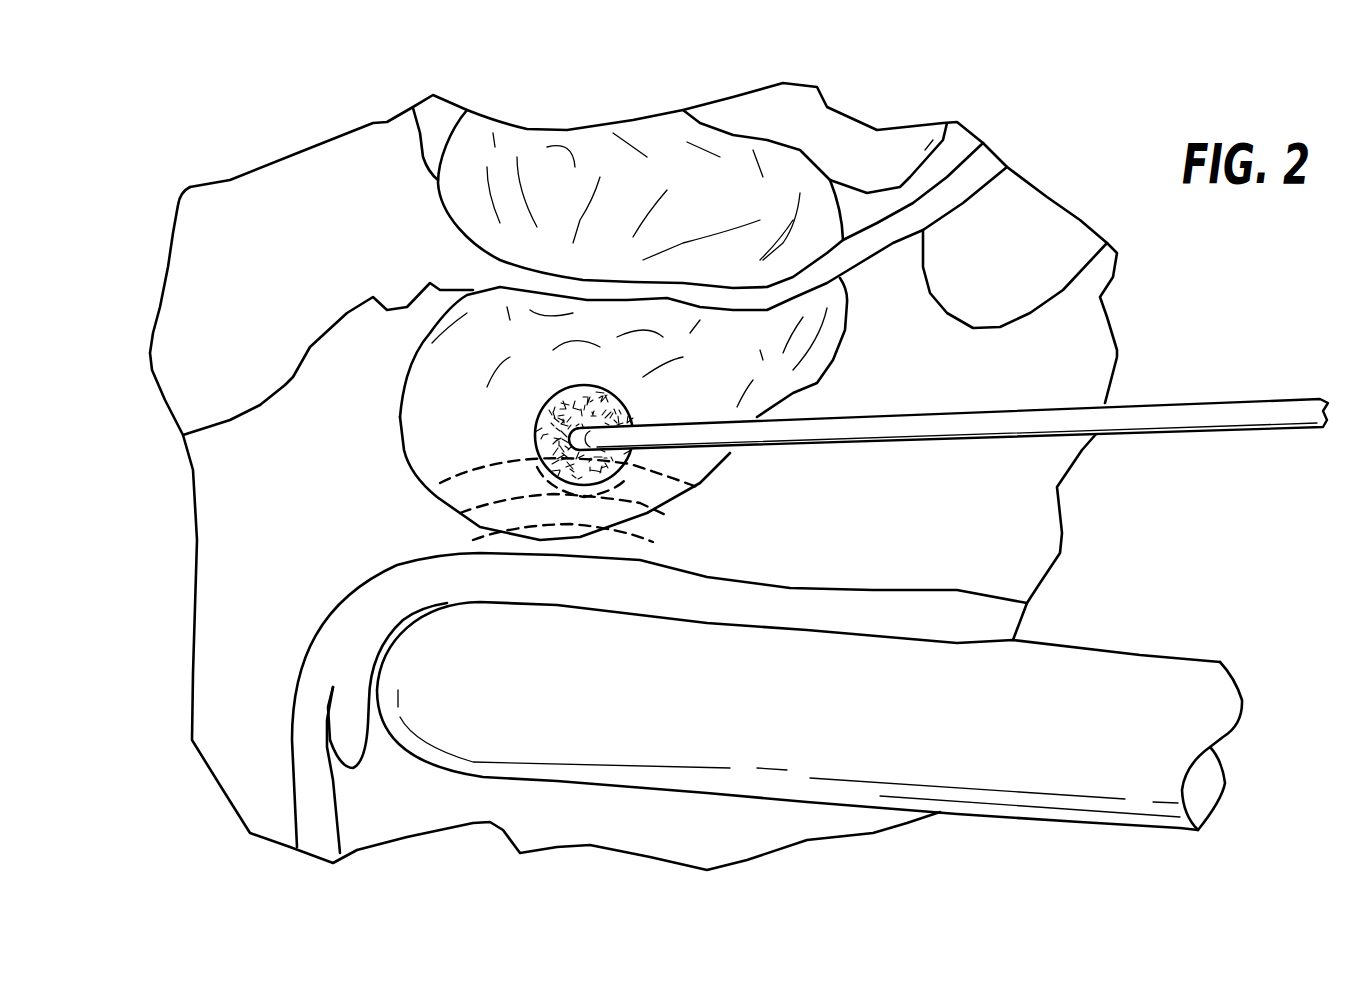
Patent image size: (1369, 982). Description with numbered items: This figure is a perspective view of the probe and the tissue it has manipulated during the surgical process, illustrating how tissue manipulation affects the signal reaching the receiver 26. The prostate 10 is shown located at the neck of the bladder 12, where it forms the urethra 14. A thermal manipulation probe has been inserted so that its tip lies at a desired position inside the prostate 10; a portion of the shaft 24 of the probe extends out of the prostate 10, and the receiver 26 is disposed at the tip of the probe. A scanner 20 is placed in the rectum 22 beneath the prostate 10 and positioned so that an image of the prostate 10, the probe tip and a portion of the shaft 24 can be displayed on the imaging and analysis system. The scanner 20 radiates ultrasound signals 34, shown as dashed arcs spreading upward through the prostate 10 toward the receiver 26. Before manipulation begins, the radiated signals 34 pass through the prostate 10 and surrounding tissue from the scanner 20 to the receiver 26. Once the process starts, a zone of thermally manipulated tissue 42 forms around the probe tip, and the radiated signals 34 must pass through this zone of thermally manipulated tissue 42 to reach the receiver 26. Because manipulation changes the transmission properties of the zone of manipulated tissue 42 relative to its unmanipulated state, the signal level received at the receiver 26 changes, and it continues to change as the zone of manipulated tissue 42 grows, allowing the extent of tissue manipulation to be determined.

The prostate 10 is at (390, 381).
The bladder 12 is at (278, 258).
The urethra 14 is at (983, 165).
The scanner 20 is at (1152, 644).
The rectum 22 is at (410, 821).
The shaft 24 is at (1158, 389).
The receiver 26 is at (580, 427).
The radiated signals 34 is at (473, 470).
The zone of thermally manipulated tissue 42 is at (547, 381).